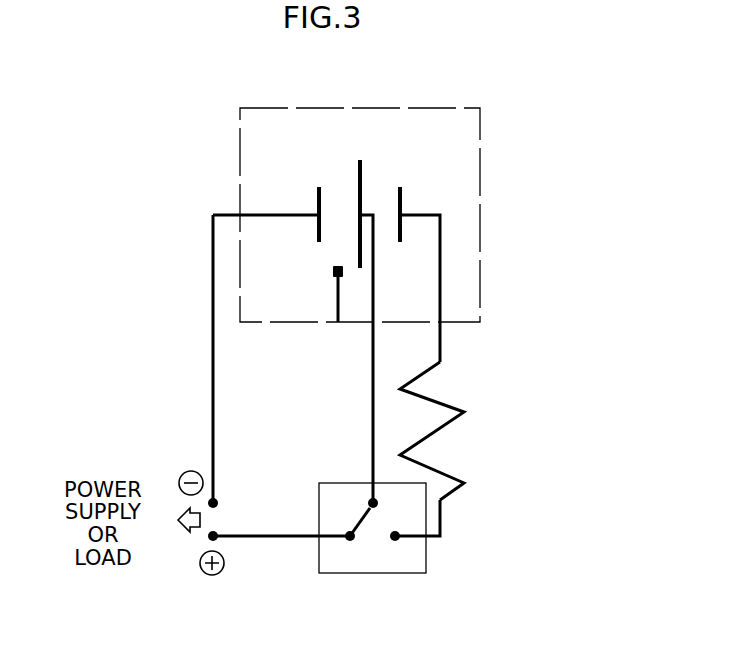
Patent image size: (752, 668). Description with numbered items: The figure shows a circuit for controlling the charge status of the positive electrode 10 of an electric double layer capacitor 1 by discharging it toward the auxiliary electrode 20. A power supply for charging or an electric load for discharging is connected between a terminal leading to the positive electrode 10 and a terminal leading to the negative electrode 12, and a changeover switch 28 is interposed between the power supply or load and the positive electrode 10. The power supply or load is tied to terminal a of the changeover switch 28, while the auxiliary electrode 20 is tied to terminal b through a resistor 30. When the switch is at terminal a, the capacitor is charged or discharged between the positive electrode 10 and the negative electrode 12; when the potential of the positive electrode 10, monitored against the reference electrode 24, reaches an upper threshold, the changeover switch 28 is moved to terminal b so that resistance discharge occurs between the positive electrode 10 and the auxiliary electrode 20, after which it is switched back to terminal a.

The electric double layer capacitor 1 is at (480, 294).
The positive electrode 10 is at (360, 170).
The negative electrode 12 is at (319, 198).
The auxiliary electrode 20 is at (400, 198).
The reference electrode 24 is at (333, 272).
The changeover switch 28 is at (372, 573).
The resistor 30 is at (464, 414).